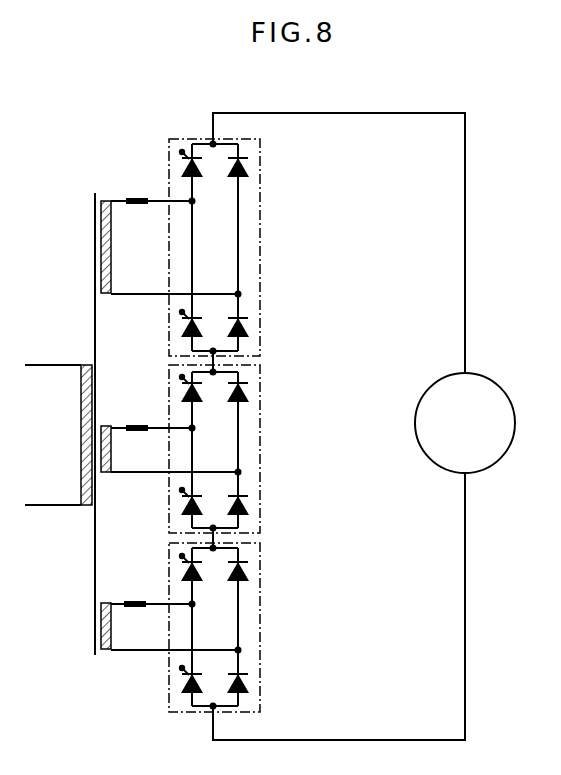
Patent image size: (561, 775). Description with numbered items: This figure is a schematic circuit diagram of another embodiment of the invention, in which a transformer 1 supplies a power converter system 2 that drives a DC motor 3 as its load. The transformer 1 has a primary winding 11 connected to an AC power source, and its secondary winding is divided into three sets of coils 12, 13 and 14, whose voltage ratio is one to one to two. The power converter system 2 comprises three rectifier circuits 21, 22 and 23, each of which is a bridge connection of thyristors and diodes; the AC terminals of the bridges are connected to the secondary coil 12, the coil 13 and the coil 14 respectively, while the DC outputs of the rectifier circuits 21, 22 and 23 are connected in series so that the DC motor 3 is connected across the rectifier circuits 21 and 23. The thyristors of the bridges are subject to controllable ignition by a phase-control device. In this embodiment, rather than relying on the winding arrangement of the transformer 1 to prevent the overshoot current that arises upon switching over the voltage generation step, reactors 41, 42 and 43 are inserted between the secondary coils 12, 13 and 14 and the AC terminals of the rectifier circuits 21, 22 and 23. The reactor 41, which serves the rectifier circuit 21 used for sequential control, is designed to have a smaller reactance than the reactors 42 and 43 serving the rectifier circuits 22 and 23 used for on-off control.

The transformer 1 is at (105, 170).
The power converter system 2 is at (222, 89).
The DC motor 3 is at (477, 436).
The primary winding 11 is at (81, 436).
The secondary coil 12 is at (111, 612).
The secondary coil 13 is at (111, 448).
The secondary coil 14 is at (111, 235).
The rectifier circuit 21 is at (260, 572).
The rectifier circuit 22 is at (260, 405).
The rectifier circuit 23 is at (260, 170).
The reactor 41 is at (131, 588).
The reactor 42 is at (136, 412).
The reactor 43 is at (136, 186).